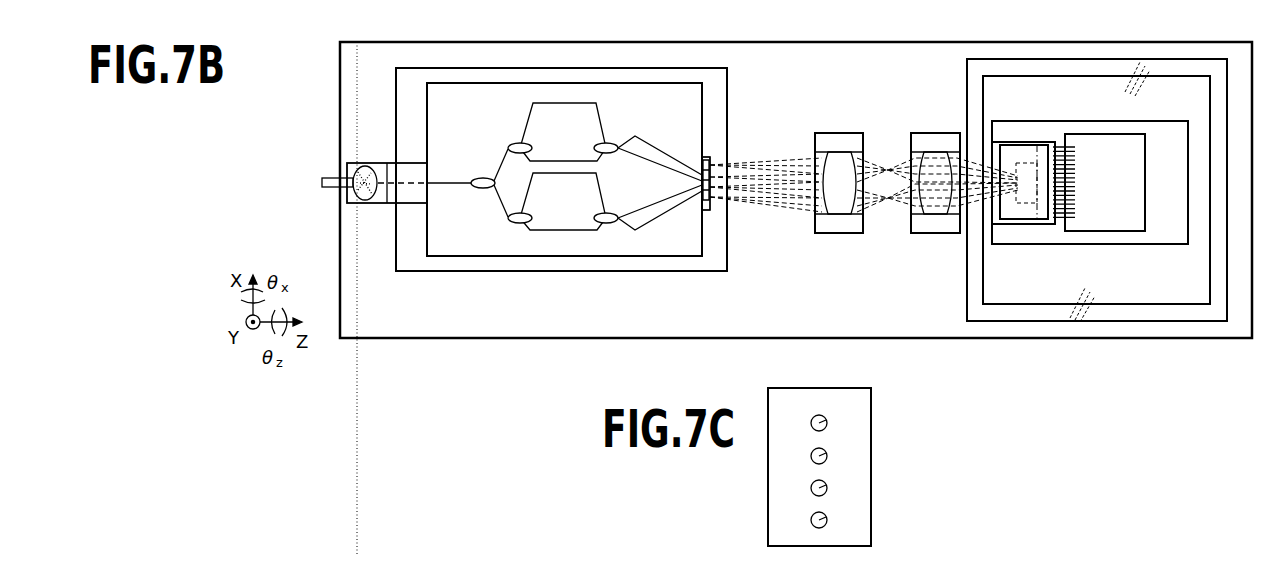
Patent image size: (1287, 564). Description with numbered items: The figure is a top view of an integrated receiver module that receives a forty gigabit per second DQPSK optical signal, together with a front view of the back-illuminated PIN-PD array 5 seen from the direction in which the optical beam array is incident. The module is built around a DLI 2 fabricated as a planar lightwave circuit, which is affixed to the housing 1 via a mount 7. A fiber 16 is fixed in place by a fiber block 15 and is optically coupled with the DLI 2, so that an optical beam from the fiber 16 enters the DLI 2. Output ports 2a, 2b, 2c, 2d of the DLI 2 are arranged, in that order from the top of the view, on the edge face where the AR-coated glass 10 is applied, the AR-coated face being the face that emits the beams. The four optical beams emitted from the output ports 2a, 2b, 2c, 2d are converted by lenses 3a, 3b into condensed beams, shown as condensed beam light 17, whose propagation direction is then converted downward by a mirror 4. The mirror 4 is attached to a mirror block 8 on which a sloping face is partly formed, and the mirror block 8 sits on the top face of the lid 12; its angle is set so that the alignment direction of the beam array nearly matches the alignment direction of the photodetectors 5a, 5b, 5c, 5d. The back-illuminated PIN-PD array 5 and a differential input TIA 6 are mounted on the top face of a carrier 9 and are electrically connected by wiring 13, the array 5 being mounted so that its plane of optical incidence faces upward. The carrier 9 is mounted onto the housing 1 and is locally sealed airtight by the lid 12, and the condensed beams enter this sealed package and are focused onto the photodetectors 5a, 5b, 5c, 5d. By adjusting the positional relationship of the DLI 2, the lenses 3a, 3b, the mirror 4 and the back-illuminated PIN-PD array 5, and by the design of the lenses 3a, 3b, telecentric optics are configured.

In FIG. 7B, the housing 1 is at (653, 302).
In FIG. 7B, the DLI 2 is at (547, 130).
In FIG. 7B, the output port 2a is at (703, 170).
In FIG. 7B, the output port 2b is at (563, 132).
In FIG. 7B, the output port 2c is at (563, 201).
In FIG. 7B, the output port 2d is at (660, 183).
In FIG. 7B, the lens 3a is at (842, 140).
In FIG. 7B, the lens 3b is at (920, 140).
In FIG. 7B, the mirror 4 is at (1038, 145).
In FIG. 7B, the back-illuminated PIN-PD array 5 is at (997, 217).
In FIG. 7C, the back-illuminated PIN-PD array 5 is at (860, 400).
In FIG. 7C, the photodetector 5a is at (827, 518).
In FIG. 7C, the photodetector 5b is at (827, 486).
In FIG. 7C, the photodetector 5c is at (827, 454).
In FIG. 7C, the photodetector 5d is at (827, 421).
In FIG. 7B, the differential input TIA 6 is at (1120, 228).
In FIG. 7B, the mount 7 is at (540, 263).
In FIG. 7B, the mirror block 8 is at (1037, 217).
In FIG. 7B, the carrier 9 is at (1162, 150).
In FIG. 7B, the AR-coated glass 10 is at (707, 212).
In FIG. 7B, the lid 12 is at (1002, 97).
In FIG. 7B, the wiring 13 is at (1073, 165).
In FIG. 7B, the fiber block 15 is at (397, 168).
In FIG. 7B, the fiber 16 is at (330, 180).
In FIG. 7B, the condensed beam light 17 is at (1037, 220).